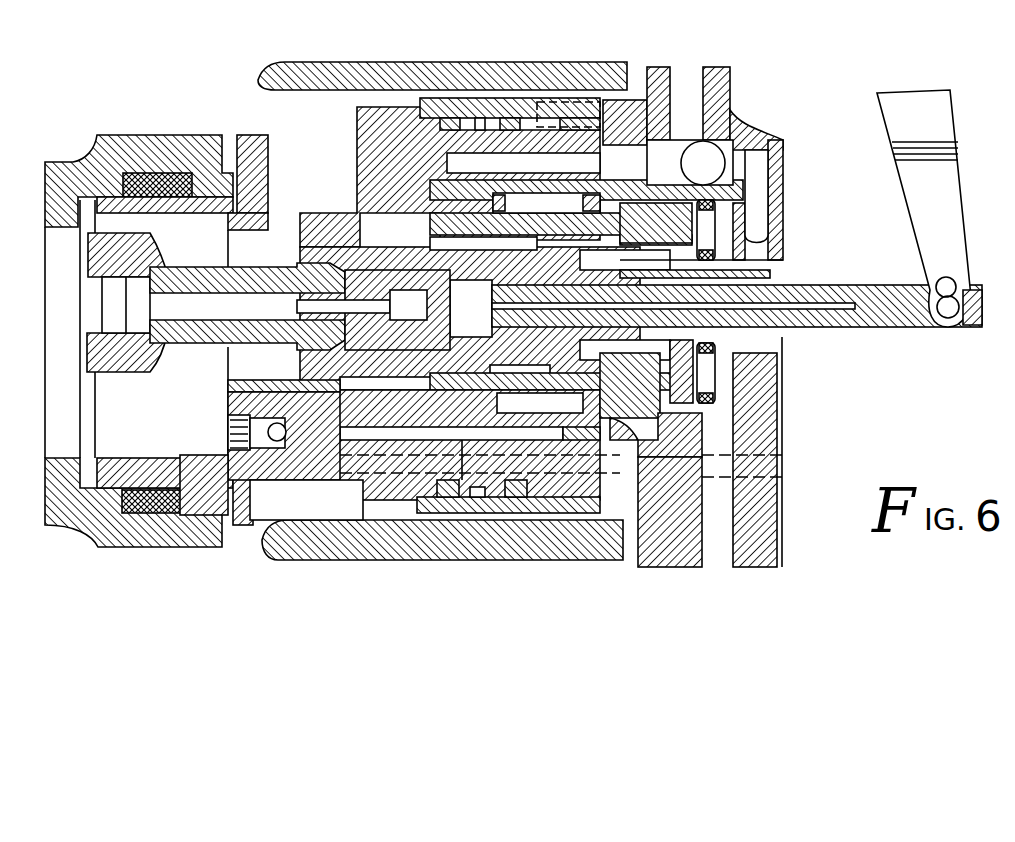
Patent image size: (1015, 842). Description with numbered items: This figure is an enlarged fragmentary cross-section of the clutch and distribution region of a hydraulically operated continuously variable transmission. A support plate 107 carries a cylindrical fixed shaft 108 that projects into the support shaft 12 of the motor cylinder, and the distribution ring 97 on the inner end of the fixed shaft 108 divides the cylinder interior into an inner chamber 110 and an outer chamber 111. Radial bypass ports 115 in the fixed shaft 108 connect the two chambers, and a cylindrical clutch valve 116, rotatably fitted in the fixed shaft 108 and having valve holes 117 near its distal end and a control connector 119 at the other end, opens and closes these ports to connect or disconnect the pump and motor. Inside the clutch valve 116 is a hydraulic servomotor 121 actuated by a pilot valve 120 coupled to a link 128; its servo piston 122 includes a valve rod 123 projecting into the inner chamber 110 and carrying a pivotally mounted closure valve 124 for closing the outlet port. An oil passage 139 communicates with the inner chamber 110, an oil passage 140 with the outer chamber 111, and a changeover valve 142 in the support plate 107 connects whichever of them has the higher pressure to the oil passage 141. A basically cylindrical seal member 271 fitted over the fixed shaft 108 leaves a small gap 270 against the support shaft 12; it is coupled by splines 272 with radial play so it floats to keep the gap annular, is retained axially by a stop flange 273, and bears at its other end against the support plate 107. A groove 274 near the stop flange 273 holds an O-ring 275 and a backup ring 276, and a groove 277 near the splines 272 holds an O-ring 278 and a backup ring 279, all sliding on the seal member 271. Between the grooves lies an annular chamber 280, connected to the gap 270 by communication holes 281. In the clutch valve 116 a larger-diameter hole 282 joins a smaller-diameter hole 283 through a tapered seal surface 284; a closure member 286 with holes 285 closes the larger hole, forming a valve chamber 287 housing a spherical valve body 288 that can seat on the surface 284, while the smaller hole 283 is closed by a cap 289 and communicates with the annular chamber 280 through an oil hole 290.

The support shaft 12 is at (312, 66).
The distribution ring 97 is at (90, 530).
The support plate 107 is at (780, 148).
The fixed shaft 108 is at (372, 135).
The inner chamber 110 is at (161, 402).
The outer chamber 111 is at (165, 395).
The bypass ports 115 is at (272, 136).
The clutch valve 116 is at (473, 173).
The valve holes 117 is at (270, 222).
The control connector 119 is at (646, 560).
The pilot valve 120 is at (885, 327).
The hydraulic servomotor 121 is at (460, 445).
The servo piston 122 is at (400, 355).
The valve rod 123 is at (222, 330).
The closure valve 124 is at (118, 365).
The link 128 is at (952, 186).
The oil passage 139 is at (650, 160).
The oil passage 140 is at (770, 210).
The oil passage 141 is at (697, 72).
The changeover valve 142 is at (733, 125).
The small gap 270 is at (560, 100).
The seal member 271 is at (522, 118).
The splines 272 is at (710, 452).
The stop flange 273 is at (412, 515).
The groove 274 is at (430, 100).
The O-ring 275 is at (455, 513).
The backup ring 276 is at (478, 512).
The groove 277 is at (568, 112).
The O-ring 278 is at (524, 513).
The backup ring 279 is at (556, 513).
The annular chamber 280 is at (482, 118).
The communication holes 281 is at (450, 98).
The larger-diameter hole 282 is at (275, 375).
The smaller-diameter hole 283 is at (580, 370).
The tapered seal surface 284 is at (271, 456).
The holes 285 is at (235, 468).
The closure member 286 is at (228, 420).
The valve chamber 287 is at (272, 460).
The spherical valve body 288 is at (288, 420).
The cap 289 is at (656, 431).
The oil hole 290 is at (462, 440).